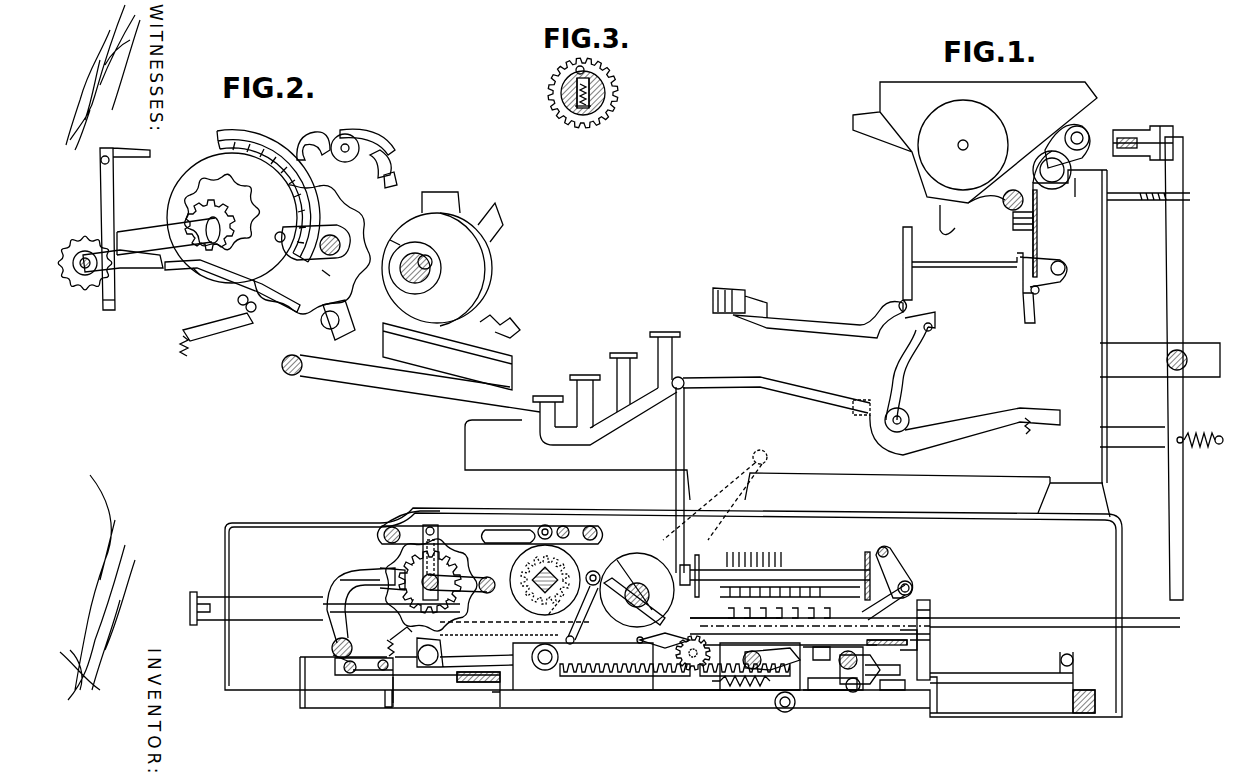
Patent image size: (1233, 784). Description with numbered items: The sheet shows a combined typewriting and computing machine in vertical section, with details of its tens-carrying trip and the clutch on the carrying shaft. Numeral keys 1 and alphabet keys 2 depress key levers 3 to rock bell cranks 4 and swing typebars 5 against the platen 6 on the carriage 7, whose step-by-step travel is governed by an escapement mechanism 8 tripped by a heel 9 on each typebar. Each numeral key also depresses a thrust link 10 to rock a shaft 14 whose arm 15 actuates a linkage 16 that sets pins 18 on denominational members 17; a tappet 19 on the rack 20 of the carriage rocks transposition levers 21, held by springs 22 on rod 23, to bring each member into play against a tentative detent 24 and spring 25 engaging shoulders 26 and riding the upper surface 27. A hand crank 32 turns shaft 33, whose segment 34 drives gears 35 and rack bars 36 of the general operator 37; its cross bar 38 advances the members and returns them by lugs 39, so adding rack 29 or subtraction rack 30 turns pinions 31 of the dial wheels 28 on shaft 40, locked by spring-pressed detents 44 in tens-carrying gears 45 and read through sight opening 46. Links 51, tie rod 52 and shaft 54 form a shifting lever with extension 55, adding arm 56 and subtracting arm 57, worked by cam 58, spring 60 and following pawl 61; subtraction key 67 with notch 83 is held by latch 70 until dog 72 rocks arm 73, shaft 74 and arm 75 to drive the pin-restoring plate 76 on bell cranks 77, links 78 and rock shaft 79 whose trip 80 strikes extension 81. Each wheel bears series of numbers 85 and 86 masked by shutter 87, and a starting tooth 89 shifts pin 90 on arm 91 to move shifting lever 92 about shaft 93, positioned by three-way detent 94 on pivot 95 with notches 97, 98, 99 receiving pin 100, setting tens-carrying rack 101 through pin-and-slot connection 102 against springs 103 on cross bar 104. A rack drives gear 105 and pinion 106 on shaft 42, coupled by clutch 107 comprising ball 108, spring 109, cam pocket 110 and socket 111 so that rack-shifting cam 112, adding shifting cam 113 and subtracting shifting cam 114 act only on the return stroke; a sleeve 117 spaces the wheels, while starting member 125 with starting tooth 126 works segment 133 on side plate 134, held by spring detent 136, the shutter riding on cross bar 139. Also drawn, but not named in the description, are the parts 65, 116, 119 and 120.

In FIG. 1, the numeral keys 1 is at (668, 332).
In FIG. 1, the alphabet keys 2 is at (617, 353).
In FIG. 1, the key levers 3 is at (782, 383).
In FIG. 1, the bell cranks 4 is at (915, 372).
In FIG. 1, the typebars 5 is at (826, 318).
In FIG. 1, the platen 6 is at (1003, 128).
In FIG. 1, the carriage 7 is at (1072, 88).
In FIG. 1, the escapement mechanism 8 is at (1040, 255).
In FIG. 1, the heel 9 is at (900, 300).
In FIG. 1, the thrust link 10 is at (686, 442).
In FIG. 1, the rock shaft 14 is at (712, 568).
In FIG. 1, the arm 15 is at (660, 572).
In FIG. 1, the linkage 16 is at (806, 560).
In FIG. 1, the denominational members 17 is at (883, 598).
In FIG. 1, the pins 18 is at (868, 602).
In FIG. 1, the tappet 19 is at (1140, 138).
In FIG. 1, the rack 20 is at (1165, 140).
In FIG. 1, the transposition levers 21 is at (1170, 296).
In FIG. 1, the springs 22 is at (1200, 432).
In FIG. 1, the rod 23 is at (1167, 360).
In FIG. 1, the tentative detent 24 is at (930, 604).
In FIG. 1, the spring 25 is at (898, 568).
In FIG. 1, the shoulders 26 is at (932, 614).
In FIG. 1, the upper surface 27 is at (1070, 618).
In FIG. 2, the dial or computing wheels 28 is at (188, 195).
In FIG. 1, the dial or computing wheels 28 is at (450, 548).
In FIG. 1, the adding rack 29 is at (470, 632).
In FIG. 1, the subtraction rack 30 is at (384, 537).
In FIG. 2, the pinions 31 is at (190, 210).
In FIG. 1, the pinions 31 is at (405, 572).
In FIG. 1, the hand crank 32 is at (768, 455).
In FIG. 1, the shaft 33 is at (622, 565).
In FIG. 1, the segment 34 is at (578, 686).
In FIG. 1, the gears 35 is at (728, 678).
In FIG. 1, the rack bars 36 is at (640, 690).
In FIG. 1, the general operator 37 is at (705, 692).
In FIG. 1, the cross bar 38 is at (878, 676).
In FIG. 1, the lugs 39 is at (920, 646).
In FIG. 2, the shaft 40 is at (160, 240).
In FIG. 1, the shaft 40 is at (385, 589).
In FIG. 2, the shaft 42 is at (432, 270).
In FIG. 3, the shaft 42 is at (606, 92).
In FIG. 1, the shaft 42 is at (598, 533).
In FIG. 1, the spring-pressed detents 44 is at (340, 585).
In FIG. 2, the tens-carrying gears 45 is at (200, 175).
In FIG. 1, the sight opening 46 is at (395, 512).
In FIG. 1, the links 51 is at (365, 680).
In FIG. 1, the tie rod 52 is at (426, 690).
In FIG. 1, the shaft 54 is at (560, 643).
In FIG. 1, the extension 55 is at (625, 677).
In FIG. 1, the adding arm 56 is at (549, 606).
In FIG. 1, the subtracting arm 57 is at (640, 645).
In FIG. 1, the cam 58 is at (648, 590).
In FIG. 1, the spring 60 is at (582, 620).
In FIG. 1, the following pawl 61 is at (663, 638).
In FIG. 1, the arm 65 is at (634, 593).
In FIG. 1, the subtraction key 67 is at (278, 597).
In FIG. 1, the latch 70 is at (1060, 662).
In FIG. 1, the one-way acting dog 72 is at (800, 700).
In FIG. 1, the arm 73 is at (753, 695).
In FIG. 1, the shaft 74 is at (810, 624).
In FIG. 1, the arm 75 is at (778, 652).
In FIG. 1, the pin-restoring plate 76 is at (824, 639).
In FIG. 1, the bell cranks 77 is at (849, 670).
In FIG. 1, the links 78 is at (825, 690).
In FIG. 1, the rock shaft 79 is at (855, 652).
In FIG. 1, the trip 80 is at (857, 690).
In FIG. 1, the extension 81 is at (900, 690).
In FIG. 1, the notch 83 is at (194, 625).
In FIG. 2, the series of numbers 85 is at (256, 146).
In FIG. 2, the series of numbers 86 is at (216, 140).
In FIG. 1, the shield or shutter 87 is at (418, 526).
In FIG. 2, the starting tooth 89 is at (242, 306).
In FIG. 2, the pin 90 is at (316, 242).
In FIG. 1, the pin 90 is at (462, 584).
In FIG. 2, the arm 91 is at (300, 225).
In FIG. 2, the shifting lever 92 is at (334, 228).
In FIG. 2, the shaft 93 is at (355, 242).
In FIG. 1, the shaft 93 is at (544, 580).
In FIG. 1, the three-way detent 94 is at (535, 526).
In FIG. 1, the pivot 95 is at (555, 526).
In FIG. 2, the notch 97 is at (312, 132).
In FIG. 2, the notch 98 is at (343, 134).
In FIG. 1, the notch 98 is at (500, 530).
In FIG. 2, the notch 99 is at (386, 152).
In FIG. 2, the pin 100 is at (370, 132).
In FIG. 2, the tens-carrying rack 101 is at (411, 367).
In FIG. 1, the tens-carrying rack 101 is at (515, 628).
In FIG. 2, the pin-and-slot connection 102 is at (343, 313).
In FIG. 2, the springs 103 is at (200, 338).
In FIG. 1, the springs 103 is at (387, 642).
In FIG. 2, the cross bar 104 is at (509, 328).
In FIG. 1, the gear 105 is at (530, 655).
In FIG. 3, the pinion 106 is at (612, 104).
In FIG. 1, the pinion 106 is at (578, 572).
In FIG. 3, the clutch 107 is at (592, 78).
In FIG. 3, the ball or roller 108 is at (576, 80).
In FIG. 3, the spring 109 is at (575, 92).
In FIG. 3, the cam pocket 110 is at (585, 70).
In FIG. 3, the socket 111 is at (575, 108).
In FIG. 2, the rack-shifting cam 112 is at (437, 269).
In FIG. 2, the adding shifting cam 113 is at (440, 192).
In FIG. 2, the subtracting shifting cam 114 is at (492, 206).
In FIG. 2, the hook 116 is at (396, 174).
In FIG. 2, the sleeve 117 is at (165, 266).
In FIG. 2, the lever 119 is at (198, 272).
In FIG. 2, the pin 120 is at (325, 274).
In FIG. 2, the starting member 125 is at (83, 280).
In FIG. 1, the starting member 125 is at (491, 625).
In FIG. 2, the starting tooth 126 is at (122, 268).
In FIG. 2, the segment 133 is at (116, 302).
In FIG. 2, the side plate 134 is at (103, 197).
In FIG. 1, the spring detent 136 is at (330, 612).
In FIG. 2, the cross bar 139 is at (101, 161).
In FIG. 1, the cross bar 139 is at (432, 525).